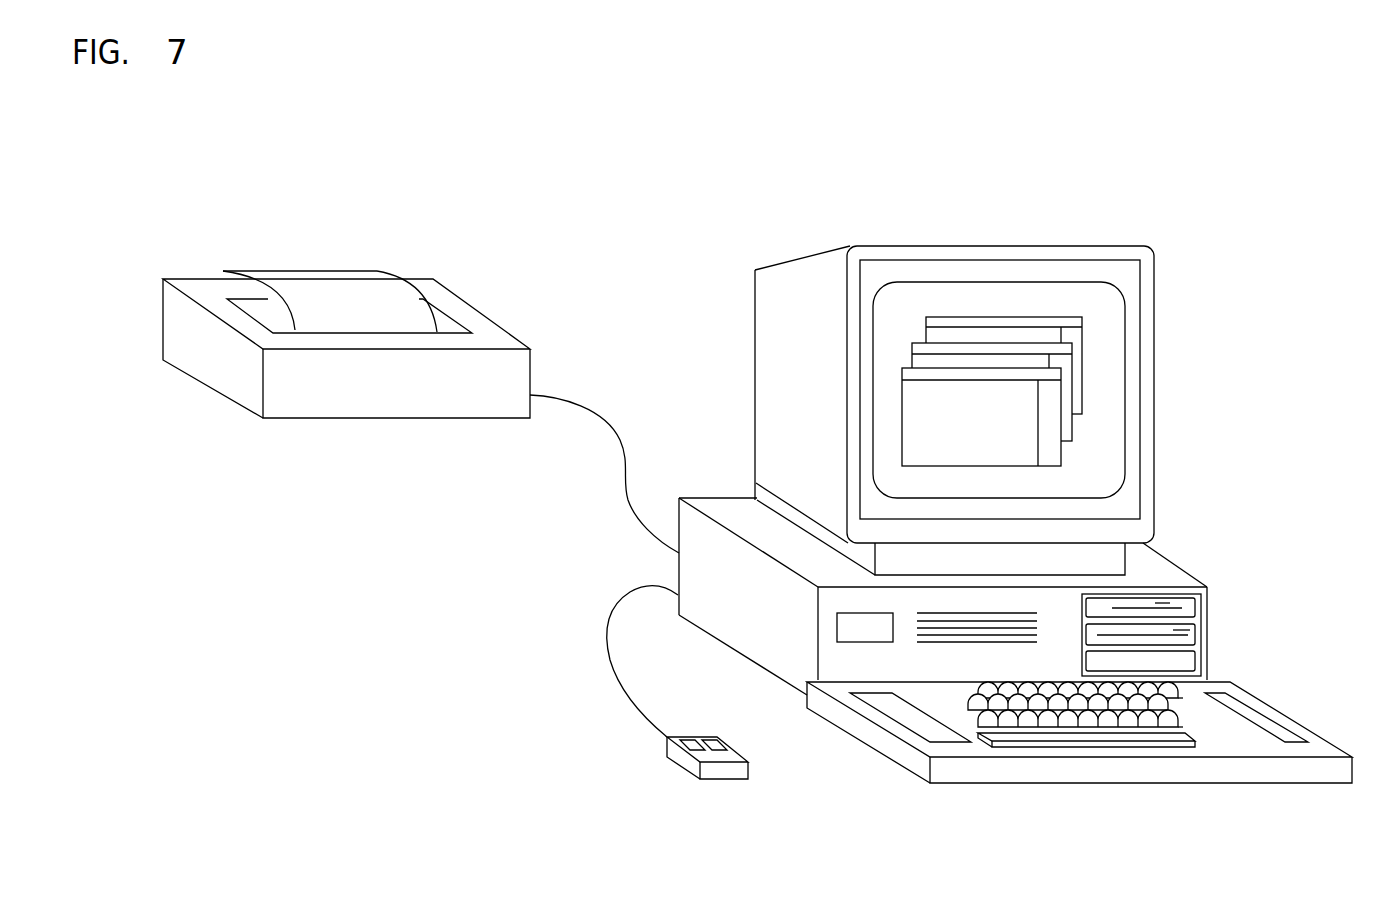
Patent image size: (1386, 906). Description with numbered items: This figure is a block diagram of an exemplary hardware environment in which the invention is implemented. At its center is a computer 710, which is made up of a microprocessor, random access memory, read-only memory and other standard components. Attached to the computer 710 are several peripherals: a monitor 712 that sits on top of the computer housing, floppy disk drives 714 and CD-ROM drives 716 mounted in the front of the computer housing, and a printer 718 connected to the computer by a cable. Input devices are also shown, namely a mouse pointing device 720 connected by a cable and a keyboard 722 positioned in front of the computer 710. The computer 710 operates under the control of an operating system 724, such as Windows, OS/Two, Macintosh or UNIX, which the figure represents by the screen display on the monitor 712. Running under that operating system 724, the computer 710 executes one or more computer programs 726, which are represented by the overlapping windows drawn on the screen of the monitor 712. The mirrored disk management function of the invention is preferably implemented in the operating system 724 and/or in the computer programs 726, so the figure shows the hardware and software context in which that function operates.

The computer 710 is at (1173, 565).
The monitor 712 is at (1033, 247).
The floppy disk drives 714 is at (1187, 640).
The CD-ROM drives 716 is at (1177, 661).
The printer 718 is at (470, 303).
The mouse pointing device 720 is at (673, 748).
The keyboard 722 is at (1272, 772).
The operating system 724 is at (912, 293).
The computer programs 726 is at (1100, 368).